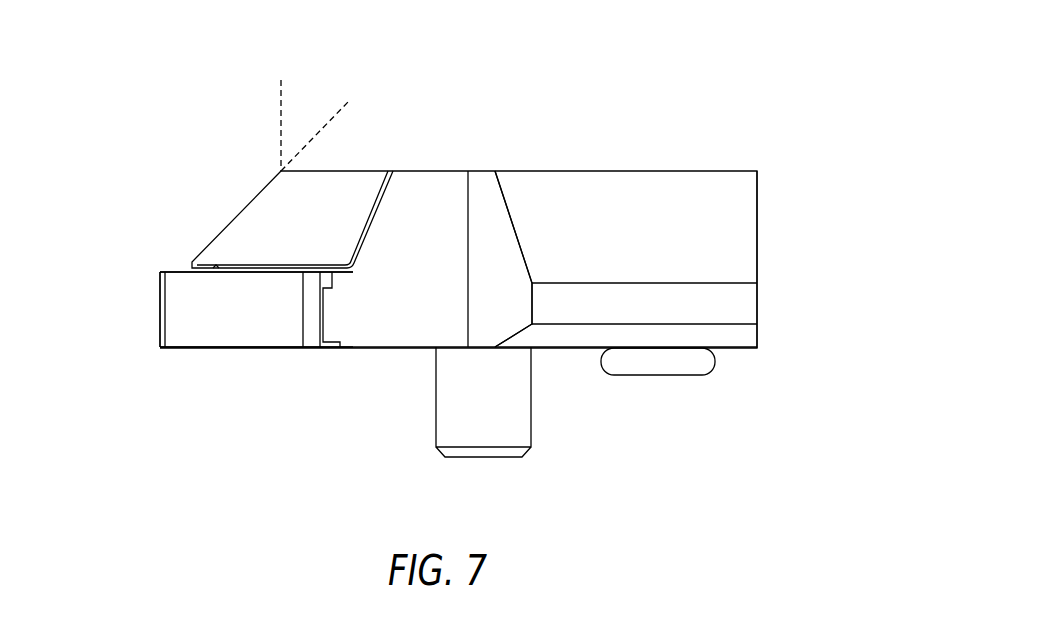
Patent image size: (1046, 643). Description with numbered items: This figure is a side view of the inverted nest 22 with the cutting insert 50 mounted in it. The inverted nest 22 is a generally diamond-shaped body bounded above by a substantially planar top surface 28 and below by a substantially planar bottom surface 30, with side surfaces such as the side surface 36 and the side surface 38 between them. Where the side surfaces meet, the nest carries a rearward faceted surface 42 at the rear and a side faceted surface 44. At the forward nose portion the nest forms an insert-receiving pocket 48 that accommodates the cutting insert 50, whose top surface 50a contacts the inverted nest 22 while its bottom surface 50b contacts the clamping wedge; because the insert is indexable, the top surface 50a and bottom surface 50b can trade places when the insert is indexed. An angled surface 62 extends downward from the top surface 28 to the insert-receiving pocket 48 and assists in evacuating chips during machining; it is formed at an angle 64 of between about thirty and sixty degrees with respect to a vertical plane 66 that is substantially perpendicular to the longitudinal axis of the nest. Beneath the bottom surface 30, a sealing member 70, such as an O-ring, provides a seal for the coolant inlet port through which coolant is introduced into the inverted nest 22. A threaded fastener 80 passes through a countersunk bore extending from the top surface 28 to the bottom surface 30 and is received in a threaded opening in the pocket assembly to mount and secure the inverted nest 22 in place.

The inverted nest 22 is at (562, 88).
The top surface 28 is at (578, 171).
The bottom surface 30 is at (412, 348).
The side surface 36 is at (634, 215).
The side surface 38 is at (370, 322).
The rearward faceted surface 42 is at (757, 192).
The side faceted surface 44 is at (498, 274).
The insert-receiving pocket 48 is at (157, 350).
The cutting insert 50 is at (142, 305).
The top surface of the cutting insert 50a is at (178, 268).
The bottom surface of the cutting insert 50b is at (243, 348).
The angled surface 62 is at (272, 215).
The angle 64 is at (332, 117).
The vertical plane 66 is at (281, 110).
The sealing member 70 is at (676, 376).
The threaded fastener 80 is at (451, 428).